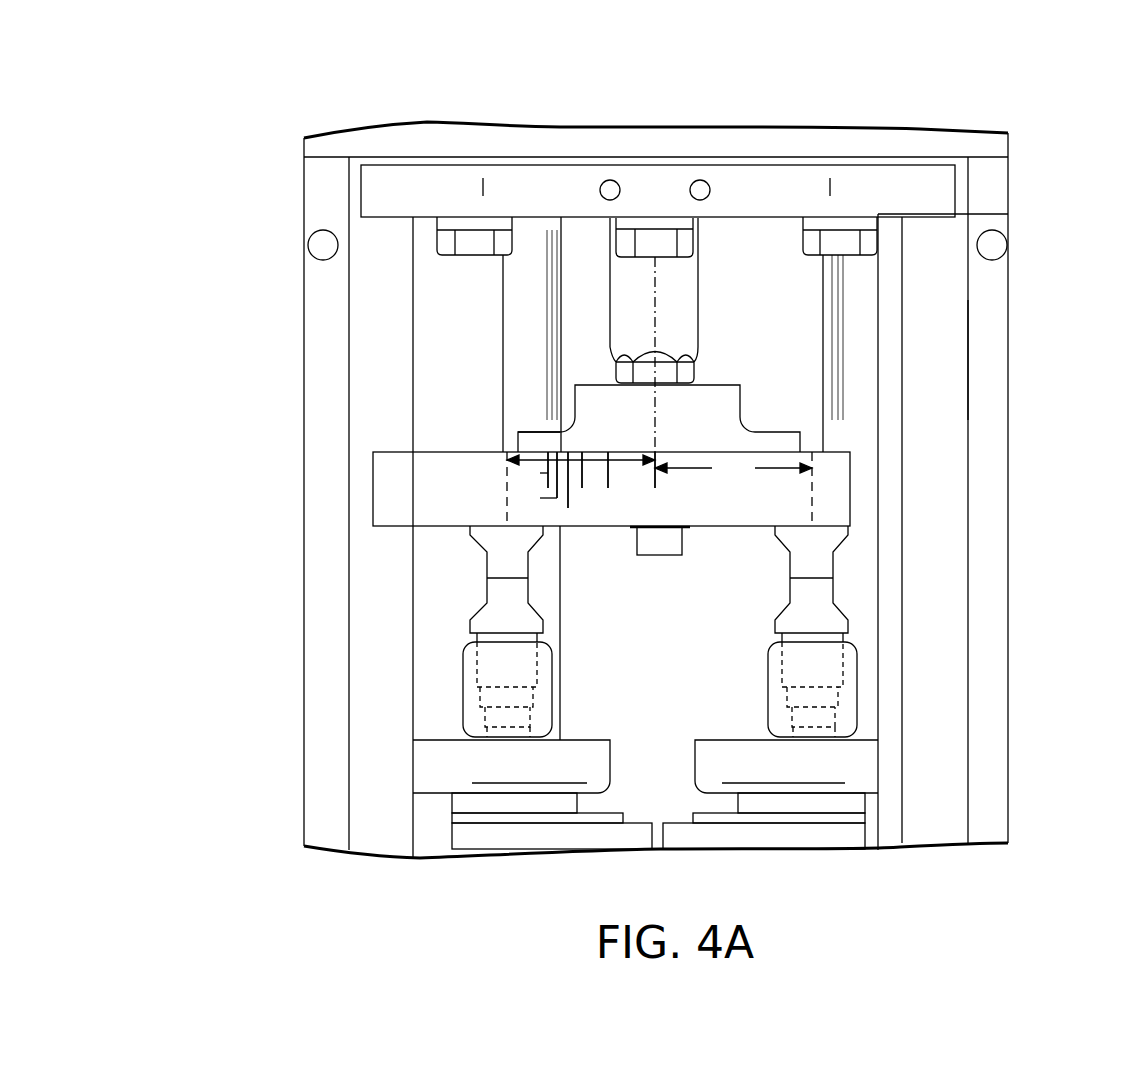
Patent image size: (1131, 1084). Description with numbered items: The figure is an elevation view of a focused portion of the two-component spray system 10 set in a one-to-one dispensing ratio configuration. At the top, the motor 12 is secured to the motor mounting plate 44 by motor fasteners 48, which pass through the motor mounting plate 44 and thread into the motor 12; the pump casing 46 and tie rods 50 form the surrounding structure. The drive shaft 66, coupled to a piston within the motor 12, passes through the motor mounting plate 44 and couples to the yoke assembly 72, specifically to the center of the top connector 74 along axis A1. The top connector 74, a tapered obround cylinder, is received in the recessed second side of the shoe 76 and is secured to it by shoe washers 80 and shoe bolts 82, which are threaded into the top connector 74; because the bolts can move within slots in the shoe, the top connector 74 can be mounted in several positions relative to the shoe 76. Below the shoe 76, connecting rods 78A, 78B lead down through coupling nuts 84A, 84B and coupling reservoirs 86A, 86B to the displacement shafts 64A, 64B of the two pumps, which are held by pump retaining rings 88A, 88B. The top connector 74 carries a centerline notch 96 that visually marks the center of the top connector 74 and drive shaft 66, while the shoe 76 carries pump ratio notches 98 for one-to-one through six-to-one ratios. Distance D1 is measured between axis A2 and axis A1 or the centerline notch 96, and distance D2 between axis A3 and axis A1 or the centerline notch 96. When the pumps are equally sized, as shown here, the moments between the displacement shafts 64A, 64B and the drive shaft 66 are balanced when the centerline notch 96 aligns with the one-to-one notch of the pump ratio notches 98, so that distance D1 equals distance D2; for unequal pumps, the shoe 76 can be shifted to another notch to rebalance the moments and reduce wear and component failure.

The spray system 10 is at (270, 112).
The motor 12 is at (641, 148).
The motor mounting plate 44 is at (523, 183).
The pump casing 46 is at (992, 382).
The motor fasteners 48 is at (478, 243).
The tie rods 50 is at (688, 334).
The displacement shaft 64A is at (503, 695).
The displacement shaft 64B is at (818, 698).
The drive shaft 66 is at (654, 335).
The yoke assembly 72 is at (768, 408).
The top connector 74 is at (517, 430).
The shoe 76 is at (390, 477).
The connecting rod 78A is at (506, 579).
The connecting rod 78B is at (811, 579).
The shoe washers 80 is at (690, 527).
The shoe bolts 82 is at (673, 545).
The coupling nut 84A is at (473, 660).
The coupling nut 84B is at (850, 660).
The coupling reservoir 86A is at (511, 659).
The coupling reservoir 86B is at (786, 766).
The pump retaining ring 88A is at (570, 833).
The pump retaining ring 88B is at (813, 837).
The centerline notch 96 is at (657, 423).
The pump ratio notches 98 is at (606, 518).
The axis A1 is at (655, 310).
The axis A2 is at (507, 497).
The axis A3 is at (812, 493).
The distance D1 is at (623, 462).
The distance D2 is at (733, 468).